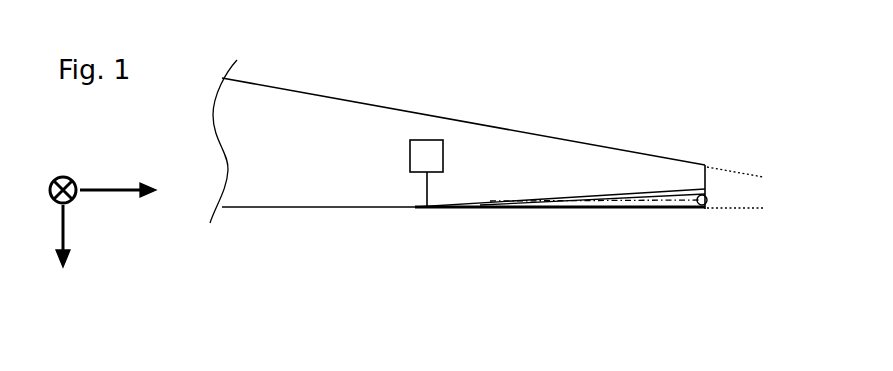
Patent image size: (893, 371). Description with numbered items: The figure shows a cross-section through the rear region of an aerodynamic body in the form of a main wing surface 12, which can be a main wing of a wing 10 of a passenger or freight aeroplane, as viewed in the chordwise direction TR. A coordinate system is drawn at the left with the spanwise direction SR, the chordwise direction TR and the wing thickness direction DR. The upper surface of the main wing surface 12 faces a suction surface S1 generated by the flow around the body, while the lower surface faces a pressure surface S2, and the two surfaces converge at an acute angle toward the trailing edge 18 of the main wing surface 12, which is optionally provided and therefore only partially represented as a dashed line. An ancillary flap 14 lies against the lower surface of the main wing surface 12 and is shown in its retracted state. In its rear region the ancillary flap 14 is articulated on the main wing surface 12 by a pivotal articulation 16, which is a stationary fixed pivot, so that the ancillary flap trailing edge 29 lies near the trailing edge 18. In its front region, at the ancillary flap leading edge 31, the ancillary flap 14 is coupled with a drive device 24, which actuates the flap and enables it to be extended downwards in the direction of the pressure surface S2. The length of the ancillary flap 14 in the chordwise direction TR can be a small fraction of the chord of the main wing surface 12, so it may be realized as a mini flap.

The wing 10 is at (509, 86).
The main wing surface 12 is at (571, 140).
The ancillary flap 14 is at (550, 208).
The pivotal articulation 16 is at (703, 207).
The main wing surface trailing edge 18 is at (732, 181).
The drive device 24 is at (444, 157).
The ancillary flap trailing edge 29 is at (708, 202).
The ancillary flap leading edge 31 is at (390, 208).
The suction surface S1 is at (449, 83).
The pressure surface S2 is at (449, 265).
The spanwise direction SR is at (70, 175).
The chordwise direction TR is at (95, 193).
The thickness direction DR is at (61, 225).